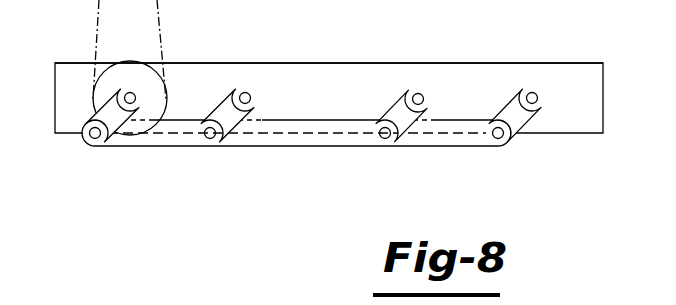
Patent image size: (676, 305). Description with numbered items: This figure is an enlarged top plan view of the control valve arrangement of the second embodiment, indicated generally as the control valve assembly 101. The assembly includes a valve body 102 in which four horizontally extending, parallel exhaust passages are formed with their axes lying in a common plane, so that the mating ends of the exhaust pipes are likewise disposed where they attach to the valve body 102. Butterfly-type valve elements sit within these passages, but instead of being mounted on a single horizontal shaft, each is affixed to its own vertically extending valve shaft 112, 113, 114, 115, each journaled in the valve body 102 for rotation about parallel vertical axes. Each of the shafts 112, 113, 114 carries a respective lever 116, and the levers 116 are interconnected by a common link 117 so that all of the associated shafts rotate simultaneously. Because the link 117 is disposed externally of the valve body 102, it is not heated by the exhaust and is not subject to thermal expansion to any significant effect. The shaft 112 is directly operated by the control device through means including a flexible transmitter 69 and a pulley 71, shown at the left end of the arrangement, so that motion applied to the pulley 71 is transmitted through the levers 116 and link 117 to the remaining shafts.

The flexible transmitter 69 is at (164, 19).
The pulley 71 is at (137, 62).
The control valve assembly 101 is at (620, 88).
The valve body 102 is at (443, 63).
The valve shaft 112 is at (138, 106).
The valve shaft 113 is at (252, 105).
The valve shaft 114 is at (424, 106).
The valve shaft 115 is at (541, 106).
The lever 116 is at (118, 143).
The common link 117 is at (336, 147).